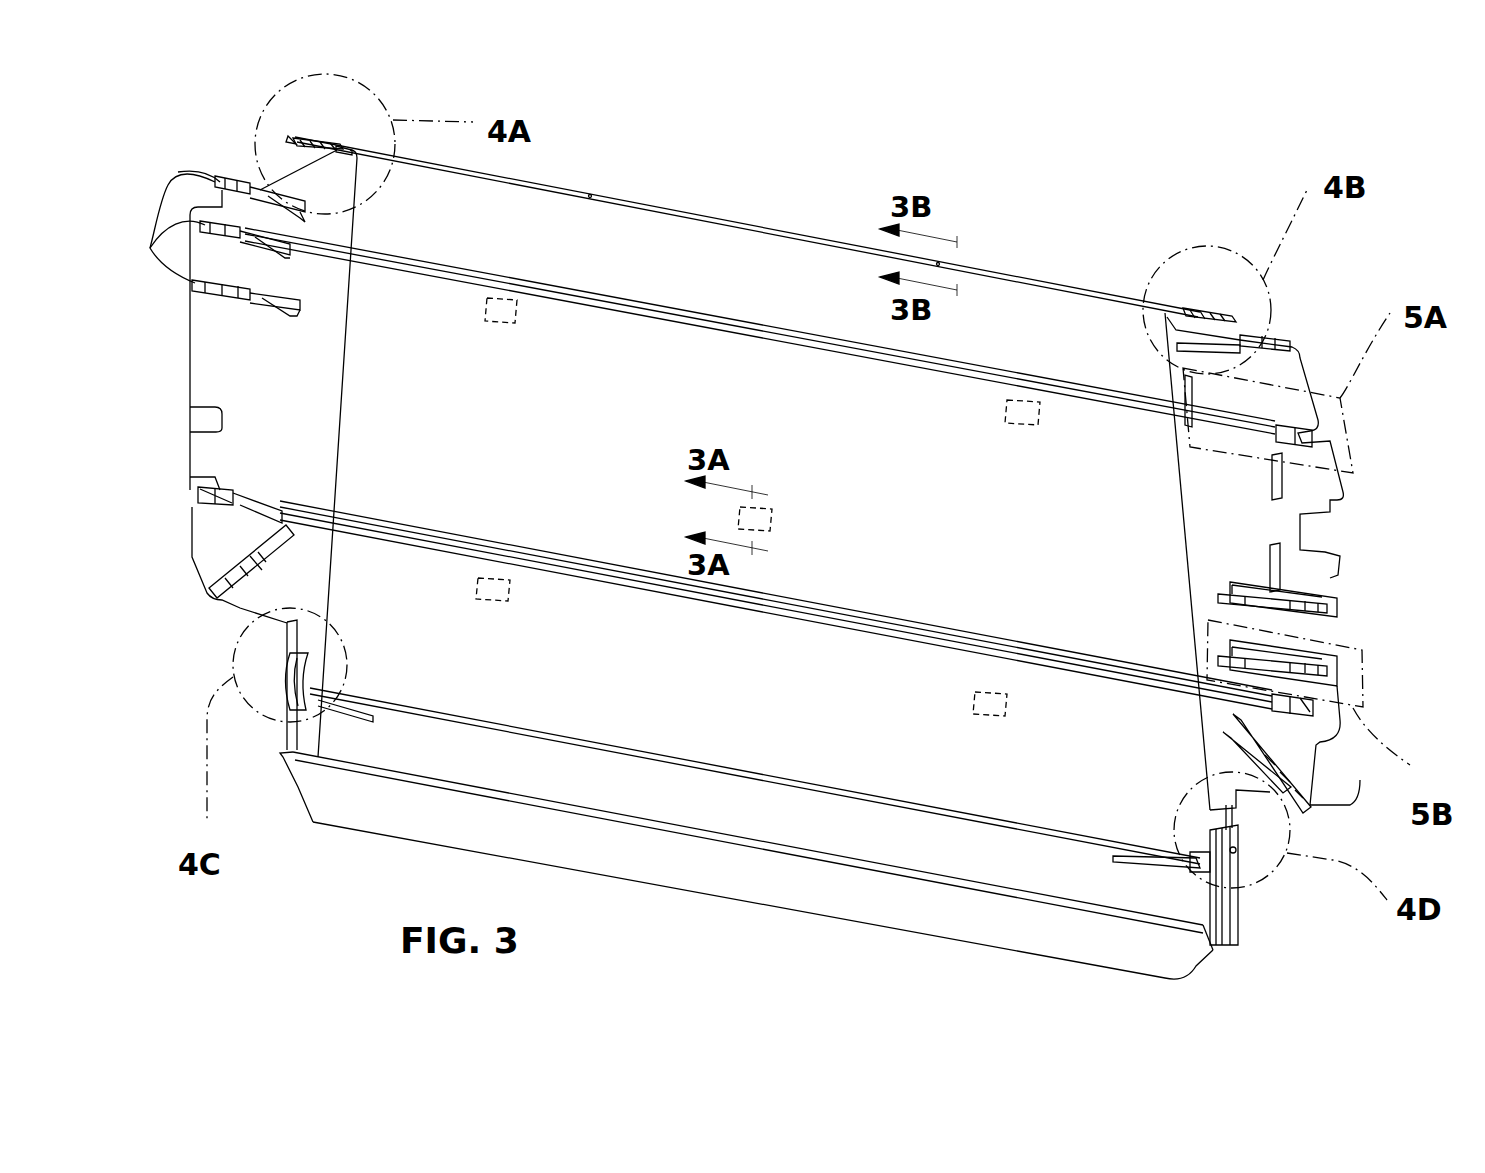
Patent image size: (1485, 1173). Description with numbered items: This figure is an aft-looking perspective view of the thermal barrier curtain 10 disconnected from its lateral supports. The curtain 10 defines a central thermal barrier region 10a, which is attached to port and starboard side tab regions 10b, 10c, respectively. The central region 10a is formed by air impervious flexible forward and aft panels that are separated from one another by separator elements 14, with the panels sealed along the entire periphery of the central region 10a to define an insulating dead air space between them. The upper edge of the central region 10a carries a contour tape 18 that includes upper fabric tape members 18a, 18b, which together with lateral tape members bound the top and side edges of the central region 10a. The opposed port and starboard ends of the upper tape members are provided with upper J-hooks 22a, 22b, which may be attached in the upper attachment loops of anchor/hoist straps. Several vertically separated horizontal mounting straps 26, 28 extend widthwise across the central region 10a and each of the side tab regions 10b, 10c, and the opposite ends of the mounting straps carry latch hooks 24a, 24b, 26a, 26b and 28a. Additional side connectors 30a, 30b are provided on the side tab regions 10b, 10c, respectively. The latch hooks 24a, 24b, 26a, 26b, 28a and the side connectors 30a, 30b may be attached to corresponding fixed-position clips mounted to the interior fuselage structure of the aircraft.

The thermal barrier curtain 10 is at (1012, 236).
The central thermal barrier region 10a is at (574, 454).
The port side tab region 10b is at (1251, 526).
The starboard side tab region 10c is at (297, 374).
The separator elements 14 is at (500, 322).
The contour tape 18 is at (703, 212).
The upper fabric tape member 18a is at (1198, 307).
The upper fabric tape member 18b is at (315, 140).
The upper J-hook 22a is at (1245, 322).
The upper J-hook 22b is at (292, 139).
The latch hook 24a is at (1187, 861).
The latch hook 24b is at (320, 676).
The horizontal mounting strap 26 is at (915, 612).
The latch hook 26a is at (1333, 712).
The latch hook 26b is at (198, 493).
The horizontal mounting strap 28 is at (728, 320).
The latch hook 28a is at (1312, 438).
The side connector 30a is at (1330, 668).
The side connector 30b is at (156, 250).